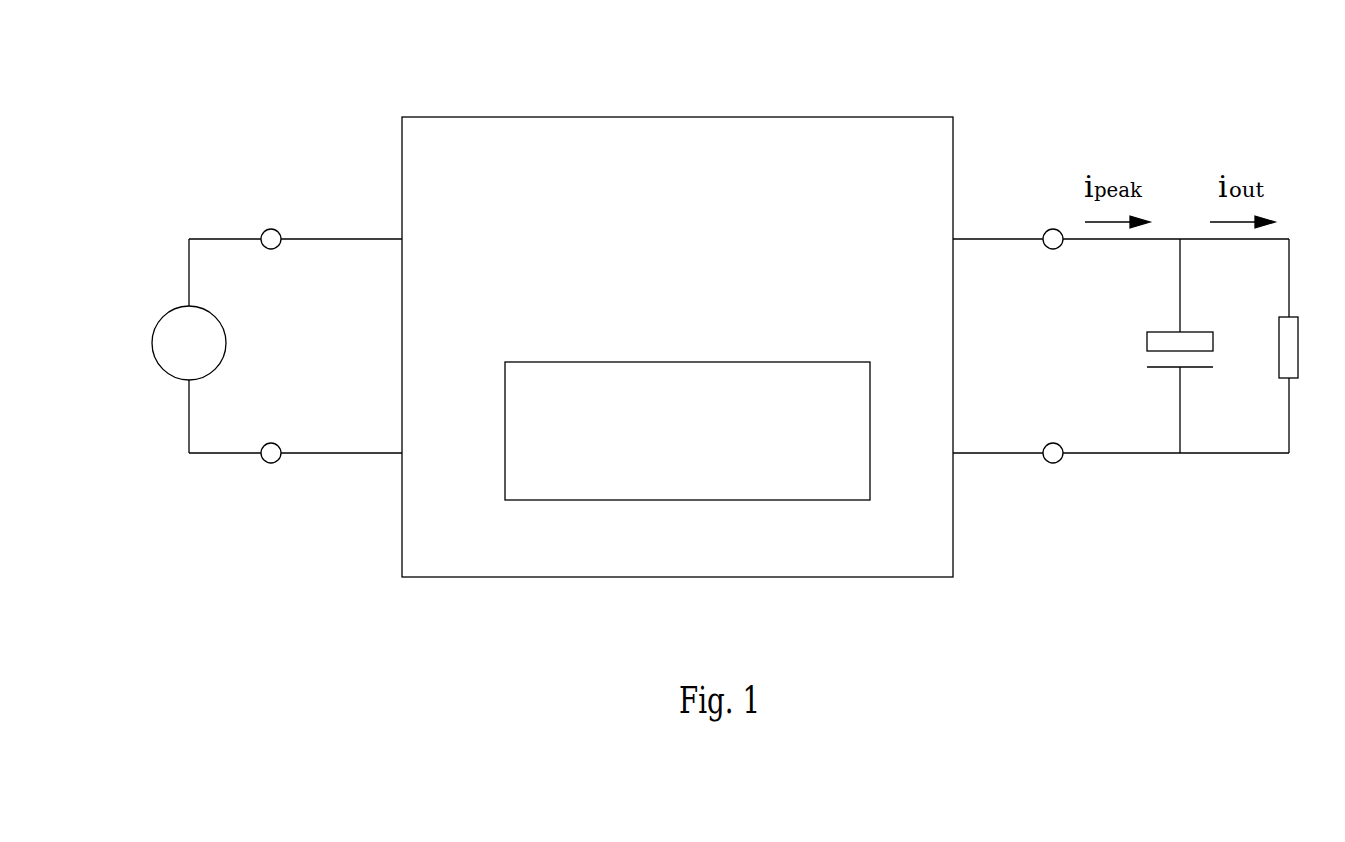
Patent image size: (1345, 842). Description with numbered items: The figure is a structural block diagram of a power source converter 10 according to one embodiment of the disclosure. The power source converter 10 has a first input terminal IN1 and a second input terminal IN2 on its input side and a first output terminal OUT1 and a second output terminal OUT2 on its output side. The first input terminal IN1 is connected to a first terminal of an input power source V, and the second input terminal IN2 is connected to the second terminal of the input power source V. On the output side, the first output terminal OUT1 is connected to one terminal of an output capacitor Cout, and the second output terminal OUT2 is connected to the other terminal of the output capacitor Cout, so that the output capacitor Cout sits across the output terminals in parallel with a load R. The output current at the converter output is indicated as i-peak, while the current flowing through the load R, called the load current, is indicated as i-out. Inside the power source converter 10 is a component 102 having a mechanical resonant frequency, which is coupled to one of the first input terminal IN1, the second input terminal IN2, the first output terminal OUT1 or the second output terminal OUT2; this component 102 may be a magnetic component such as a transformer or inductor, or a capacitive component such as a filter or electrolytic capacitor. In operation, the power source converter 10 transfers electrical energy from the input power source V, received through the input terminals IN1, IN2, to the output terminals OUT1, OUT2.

The power source converter 10 is at (681, 117).
The component with a mechanical resonant frequency 102 is at (697, 483).
The first input terminal IN1 is at (295, 260).
The second input terminal IN2 is at (295, 473).
The first output terminal OUT1 is at (1121, 255).
The second output terminal OUT2 is at (1121, 469).
The input power source V is at (189, 346).
The output capacitor Cout is at (1147, 346).
The load R is at (1305, 346).